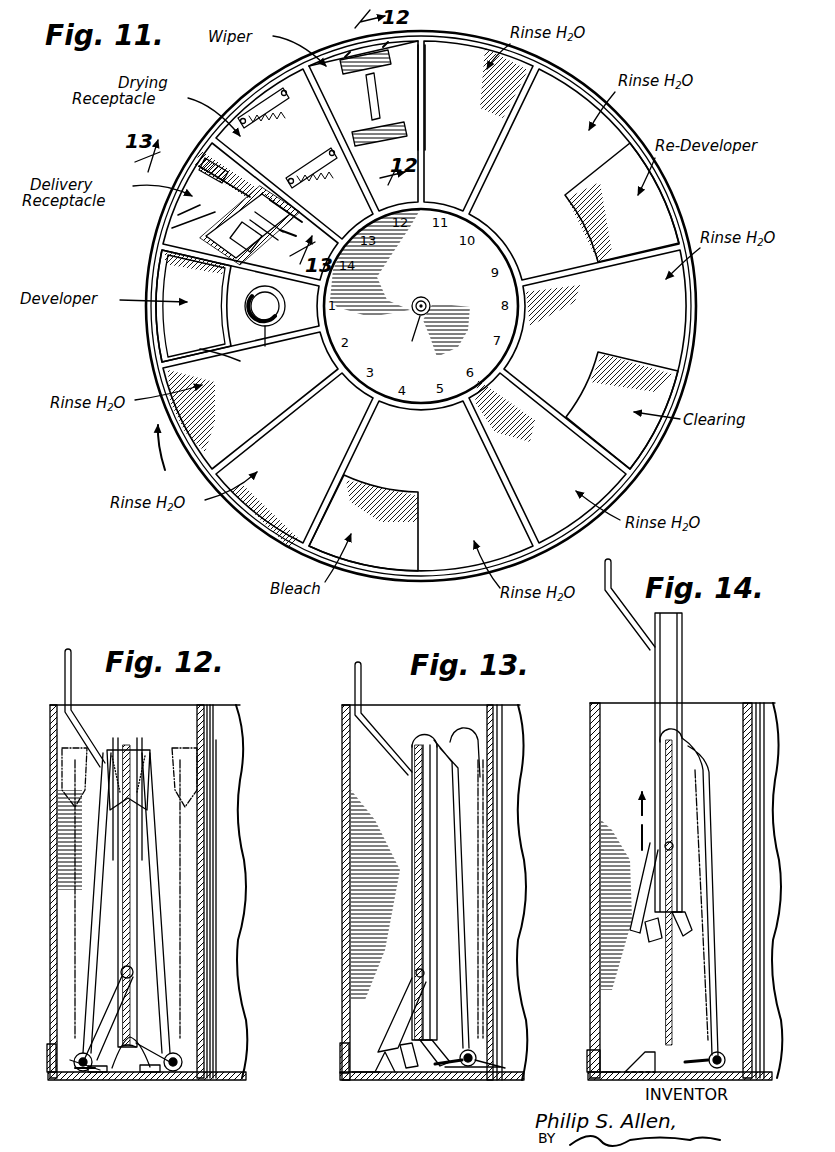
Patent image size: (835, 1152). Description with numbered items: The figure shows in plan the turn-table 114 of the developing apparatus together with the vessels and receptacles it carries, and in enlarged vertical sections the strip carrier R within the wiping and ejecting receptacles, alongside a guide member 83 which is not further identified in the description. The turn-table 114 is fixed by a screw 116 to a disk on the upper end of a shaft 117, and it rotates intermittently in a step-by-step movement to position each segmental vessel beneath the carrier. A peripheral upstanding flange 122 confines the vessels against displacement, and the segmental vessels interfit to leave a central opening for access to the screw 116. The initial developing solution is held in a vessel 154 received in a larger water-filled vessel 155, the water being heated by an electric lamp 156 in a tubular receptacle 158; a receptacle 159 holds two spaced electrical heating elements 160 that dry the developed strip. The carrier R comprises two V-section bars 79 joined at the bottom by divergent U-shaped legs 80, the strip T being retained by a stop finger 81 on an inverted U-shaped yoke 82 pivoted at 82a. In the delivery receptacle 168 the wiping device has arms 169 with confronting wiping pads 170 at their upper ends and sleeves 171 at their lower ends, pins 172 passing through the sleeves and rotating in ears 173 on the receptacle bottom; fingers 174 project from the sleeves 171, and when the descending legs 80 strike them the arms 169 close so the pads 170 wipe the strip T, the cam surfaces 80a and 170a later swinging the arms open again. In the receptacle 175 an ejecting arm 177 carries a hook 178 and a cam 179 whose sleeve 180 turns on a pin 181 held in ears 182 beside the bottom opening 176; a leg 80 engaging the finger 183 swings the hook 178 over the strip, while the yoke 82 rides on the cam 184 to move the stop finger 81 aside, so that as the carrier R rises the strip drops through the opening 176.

In FIG. 11, the turn-table 114 is at (421, 306).
In FIG. 12, the turn-table 114 is at (205, 1082).
In FIG. 13, the turn-table 114 is at (512, 1084).
In FIG. 11, the screw 116 is at (430, 300).
In FIG. 11, the shaft 117 is at (413, 335).
In FIG. 11, the peripheral upstanding flange 122 is at (690, 200).
In FIG. 14, the peripheral upstanding flange 122 is at (590, 1052).
In FIG. 11, the vessel 154 is at (162, 325).
In FIG. 11, the larger vessel 155 is at (240, 351).
In FIG. 11, the electric lamp 156 is at (272, 329).
In FIG. 11, the tubular receptacle 158 is at (252, 306).
In FIG. 11, the receptacle 159 is at (262, 92).
In FIG. 11, the electrical heating elements 160 is at (282, 106).
In FIG. 11, the delivery receptacle 168 is at (412, 98).
In FIG. 12, the delivery receptacle 168 is at (207, 942).
In FIG. 11, the arms 169 is at (397, 45).
In FIG. 12, the arms 169 is at (96, 865).
In FIG. 11, the wiping pads 170 is at (350, 52).
In FIG. 12, the wiping pads 170 is at (112, 772).
In FIG. 12, the cam surface 170a is at (112, 805).
In FIG. 11, the sleeves 171 is at (410, 133).
In FIG. 12, the sleeves 171 is at (74, 1060).
In FIG. 12, the pins 172 is at (78, 1078).
In FIG. 11, the ears 173 is at (406, 60).
In FIG. 12, the ears 173 is at (90, 1073).
In FIG. 11, the fingers 174 is at (384, 96).
In FIG. 12, the fingers 174 is at (100, 1073).
In FIG. 11, the receptacle 175 is at (172, 232).
In FIG. 13, the receptacle 175 is at (342, 828).
In FIG. 14, the receptacle 175 is at (592, 868).
In FIG. 11, the bottom opening 176 is at (180, 218).
In FIG. 13, the bottom opening 176 is at (372, 1078).
In FIG. 14, the bottom opening 176 is at (605, 1080).
In FIG. 11, the arm 177 is at (262, 240).
In FIG. 13, the arm 177 is at (462, 952).
In FIG. 14, the arm 177 is at (708, 885).
In FIG. 13, the hook 178 is at (416, 740).
In FIG. 14, the hook 178 is at (678, 735).
In FIG. 13, the cam 179 is at (440, 770).
In FIG. 14, the cam 179 is at (700, 760).
In FIG. 11, the sleeve 180 is at (285, 207).
In FIG. 13, the sleeve 180 is at (478, 1058).
In FIG. 11, the pin 181 is at (288, 222).
In FIG. 13, the pin 181 is at (470, 1068).
In FIG. 14, the pin 181 is at (712, 1052).
In FIG. 11, the ears 182 is at (238, 260).
In FIG. 13, the ears 182 is at (465, 1070).
In FIG. 11, the finger 183 is at (250, 228).
In FIG. 13, the finger 183 is at (442, 1068).
In FIG. 14, the finger 183 is at (690, 1062).
In FIG. 11, the cam 184 is at (212, 165).
In FIG. 13, the cam 184 is at (375, 1067).
In FIG. 14, the cam 184 is at (646, 1056).
In FIG. 12, the bars 79 is at (118, 917).
In FIG. 13, the bars 79 is at (413, 905).
In FIG. 12, the U-shaped legs 80 is at (126, 1070).
In FIG. 13, the U-shaped legs 80 is at (445, 1048).
In FIG. 14, the U-shaped legs 80 is at (690, 928).
In FIG. 12, the cam surface 80a is at (182, 1055).
In FIG. 12, the stop finger 81 is at (140, 1048).
In FIG. 13, the stop finger 81 is at (418, 1070).
In FIG. 14, the stop finger 81 is at (654, 944).
In FIG. 12, the inverted U-shaped yoke 82 is at (110, 1000).
In FIG. 13, the inverted U-shaped yoke 82 is at (400, 1010).
In FIG. 14, the inverted U-shaped yoke 82 is at (651, 875).
In FIG. 12, the pivot 82a is at (120, 973).
In FIG. 13, the pivot 82a is at (416, 973).
In FIG. 14, the pivot 82a is at (674, 845).
In FIG. 12, the guide hook 83 is at (70, 660).
In FIG. 13, the guide hook 83 is at (362, 676).
In FIG. 14, the guide hook 83 is at (630, 628).
In FIG. 12, the photographic strip T is at (127, 745).
In FIG. 13, the photographic strip T is at (417, 816).
In FIG. 14, the photographic strip T is at (664, 775).
In FIG. 12, the strip carrier R is at (116, 892).
In FIG. 13, the strip carrier R is at (410, 934).
In FIG. 14, the strip carrier R is at (684, 666).